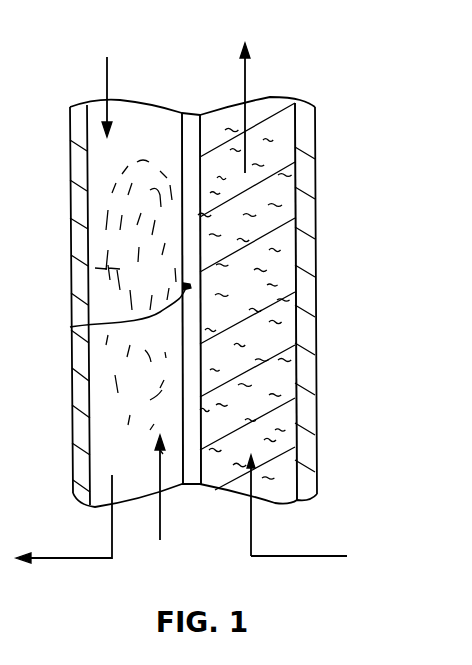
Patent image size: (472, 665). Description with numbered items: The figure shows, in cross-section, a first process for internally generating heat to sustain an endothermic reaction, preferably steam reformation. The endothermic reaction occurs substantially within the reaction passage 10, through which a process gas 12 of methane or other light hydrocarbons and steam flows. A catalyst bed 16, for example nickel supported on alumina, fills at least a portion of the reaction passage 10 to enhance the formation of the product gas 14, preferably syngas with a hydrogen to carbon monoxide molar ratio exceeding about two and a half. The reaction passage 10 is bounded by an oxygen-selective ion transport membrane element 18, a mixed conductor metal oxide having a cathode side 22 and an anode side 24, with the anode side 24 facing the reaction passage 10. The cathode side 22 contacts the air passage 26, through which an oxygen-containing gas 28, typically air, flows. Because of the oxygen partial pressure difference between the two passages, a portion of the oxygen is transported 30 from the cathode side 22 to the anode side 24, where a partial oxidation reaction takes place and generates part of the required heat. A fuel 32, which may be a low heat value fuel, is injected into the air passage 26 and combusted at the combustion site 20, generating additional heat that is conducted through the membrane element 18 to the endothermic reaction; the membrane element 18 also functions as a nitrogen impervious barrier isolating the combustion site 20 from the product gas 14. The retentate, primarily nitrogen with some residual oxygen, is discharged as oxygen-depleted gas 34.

The reaction passage 10 is at (282, 322).
The process gas 12 is at (312, 556).
The product gas 14 is at (248, 80).
The catalyst bed 16 is at (281, 213).
The oxygen-selective ion transport membrane element 18 is at (192, 468).
The combustion site 20 is at (118, 272).
The cathode side 22 is at (180, 147).
The anode side 24 is at (200, 138).
The air passage 26 is at (115, 438).
The oxygen-containing gas 28 is at (106, 82).
The oxygen transport 30 is at (75, 327).
The fuel 32 is at (160, 518).
The oxygen-depleted gas 34 is at (68, 563).